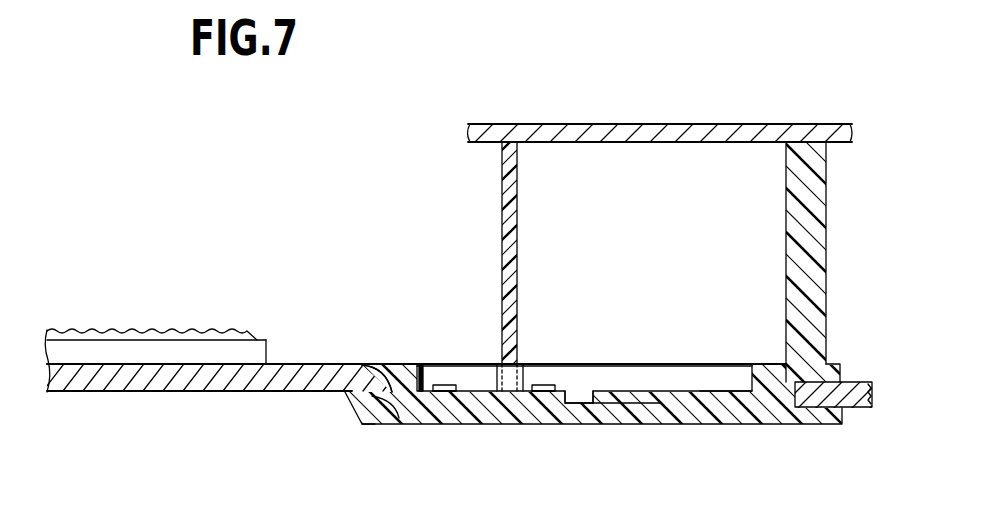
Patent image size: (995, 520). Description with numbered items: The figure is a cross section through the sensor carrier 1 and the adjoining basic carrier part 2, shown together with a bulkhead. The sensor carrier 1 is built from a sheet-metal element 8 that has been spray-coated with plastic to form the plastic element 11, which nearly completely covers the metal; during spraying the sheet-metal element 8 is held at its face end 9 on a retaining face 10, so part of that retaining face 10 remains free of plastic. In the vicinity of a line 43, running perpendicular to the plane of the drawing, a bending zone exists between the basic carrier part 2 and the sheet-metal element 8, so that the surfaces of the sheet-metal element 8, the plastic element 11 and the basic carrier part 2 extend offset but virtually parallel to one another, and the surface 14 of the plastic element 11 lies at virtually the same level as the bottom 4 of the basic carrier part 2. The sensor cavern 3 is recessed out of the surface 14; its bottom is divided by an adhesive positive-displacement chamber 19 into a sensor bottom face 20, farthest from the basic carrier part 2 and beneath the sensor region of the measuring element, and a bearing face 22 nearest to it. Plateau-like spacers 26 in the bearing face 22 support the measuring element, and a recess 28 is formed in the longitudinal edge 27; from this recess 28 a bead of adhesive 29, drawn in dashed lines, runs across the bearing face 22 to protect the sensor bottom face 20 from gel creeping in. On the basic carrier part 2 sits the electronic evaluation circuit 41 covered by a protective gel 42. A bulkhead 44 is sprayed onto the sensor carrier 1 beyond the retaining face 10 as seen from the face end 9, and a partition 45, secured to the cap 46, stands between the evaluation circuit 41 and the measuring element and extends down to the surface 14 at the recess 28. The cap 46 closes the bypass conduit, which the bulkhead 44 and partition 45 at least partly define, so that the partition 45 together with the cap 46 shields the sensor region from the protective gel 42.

The sensor carrier 1 is at (815, 427).
The basic carrier part 2 is at (222, 378).
The sensor cavern 3 is at (640, 372).
The bottom 4 is at (112, 364).
The sheet-metal element 8 is at (387, 412).
The face end 9 is at (873, 396).
The retaining face 10 is at (853, 380).
The plastic element 11 is at (367, 426).
The surface 14 is at (405, 364).
The adhesive positive-displacement chamber 19 is at (577, 392).
The sensor bottom face 20 is at (703, 390).
The bearing face 22 is at (429, 386).
The spacers 26 is at (545, 395).
The longitudinal edge 27 is at (662, 425).
The recess 28 is at (531, 368).
The bead of adhesive 29 is at (497, 373).
The electronic evaluation circuit 41 is at (73, 352).
The protective gel 42 is at (160, 330).
The line 43 is at (383, 365).
The bulkhead 44 is at (786, 185).
The partition 45 is at (517, 188).
The cap 46 is at (712, 124).